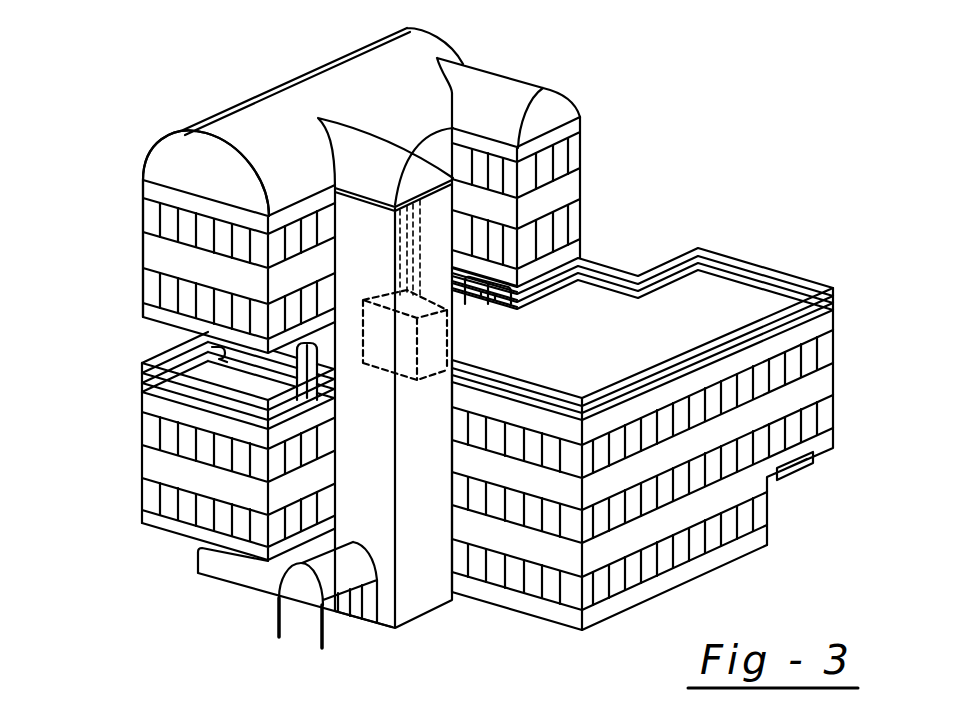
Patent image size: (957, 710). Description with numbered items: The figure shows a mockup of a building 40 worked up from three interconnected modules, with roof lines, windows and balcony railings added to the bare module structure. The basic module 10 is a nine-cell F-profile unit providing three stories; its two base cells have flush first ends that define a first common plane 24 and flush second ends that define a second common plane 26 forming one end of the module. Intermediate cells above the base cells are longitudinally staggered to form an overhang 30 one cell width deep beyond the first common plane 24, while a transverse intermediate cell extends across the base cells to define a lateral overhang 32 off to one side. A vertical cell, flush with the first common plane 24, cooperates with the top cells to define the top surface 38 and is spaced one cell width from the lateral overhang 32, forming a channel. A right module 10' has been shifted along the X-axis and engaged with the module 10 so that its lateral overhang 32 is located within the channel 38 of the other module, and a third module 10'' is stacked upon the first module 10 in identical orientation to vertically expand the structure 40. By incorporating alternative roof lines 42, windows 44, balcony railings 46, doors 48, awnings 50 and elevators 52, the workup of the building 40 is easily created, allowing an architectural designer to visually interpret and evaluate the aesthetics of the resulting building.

The module 10 is at (189, 461).
The right module 10' is at (643, 418).
The third module 10'' is at (190, 266).
The first common plane 24 is at (212, 352).
The second common plane 26 is at (537, 553).
The overhang 30 is at (155, 533).
The lateral overhang 32 is at (576, 298).
The top surface 38 is at (451, 157).
The mock building structure 40 is at (128, 140).
The roof lines 42 is at (288, 128).
The windows 44 is at (566, 158).
The balcony railings 46 is at (723, 247).
The doors 48 is at (362, 623).
The awnings 50 is at (282, 569).
The elevators 52 is at (453, 337).